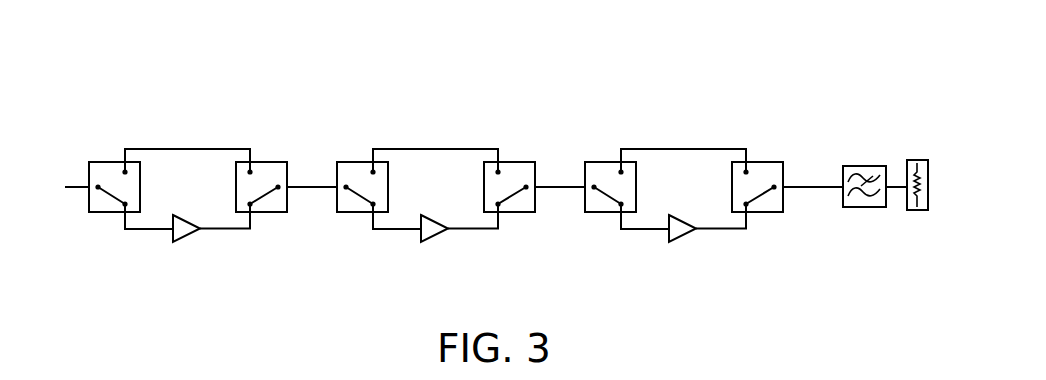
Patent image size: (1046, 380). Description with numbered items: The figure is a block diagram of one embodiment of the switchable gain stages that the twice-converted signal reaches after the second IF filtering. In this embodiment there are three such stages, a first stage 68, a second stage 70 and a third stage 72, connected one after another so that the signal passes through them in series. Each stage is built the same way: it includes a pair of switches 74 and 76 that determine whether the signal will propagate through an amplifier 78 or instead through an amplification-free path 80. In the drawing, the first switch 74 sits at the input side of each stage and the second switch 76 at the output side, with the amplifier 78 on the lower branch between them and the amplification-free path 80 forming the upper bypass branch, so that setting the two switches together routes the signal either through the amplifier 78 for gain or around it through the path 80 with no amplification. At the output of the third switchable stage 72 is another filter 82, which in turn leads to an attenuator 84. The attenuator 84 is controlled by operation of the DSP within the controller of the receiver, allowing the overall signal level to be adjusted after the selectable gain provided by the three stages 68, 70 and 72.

The first switchable gain stage 68 is at (250, 99).
The second switchable gain stage 70 is at (498, 99).
The third switchable gain stage 72 is at (746, 99).
The switch 74 is at (102, 212).
The switch 76 is at (275, 207).
The amplifier 78 is at (187, 233).
The amplification-free path 80 is at (183, 149).
The filter 82 is at (852, 166).
The attenuator 84 is at (915, 160).